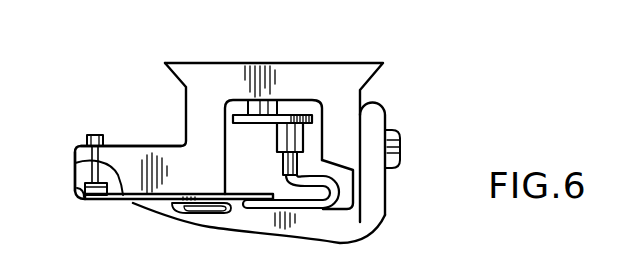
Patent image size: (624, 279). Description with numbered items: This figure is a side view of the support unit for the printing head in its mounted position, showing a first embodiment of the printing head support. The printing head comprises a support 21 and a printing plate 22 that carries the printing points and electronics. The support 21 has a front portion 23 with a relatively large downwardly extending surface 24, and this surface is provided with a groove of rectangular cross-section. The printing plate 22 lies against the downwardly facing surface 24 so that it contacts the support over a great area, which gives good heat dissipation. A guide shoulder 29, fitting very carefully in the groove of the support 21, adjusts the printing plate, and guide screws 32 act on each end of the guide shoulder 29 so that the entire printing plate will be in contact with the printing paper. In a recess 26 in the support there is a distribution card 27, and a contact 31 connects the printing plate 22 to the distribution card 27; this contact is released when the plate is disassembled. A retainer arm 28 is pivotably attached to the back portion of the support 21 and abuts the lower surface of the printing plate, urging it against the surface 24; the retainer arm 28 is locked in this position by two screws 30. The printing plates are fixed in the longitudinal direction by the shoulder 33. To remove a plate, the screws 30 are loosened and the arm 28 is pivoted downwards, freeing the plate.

The support 21 is at (392, 70).
The printing plate 22 is at (241, 199).
The front portion 23 is at (70, 146).
The downwardly extending surface 24 is at (75, 163).
The recess 26 is at (265, 168).
The distribution card 27 is at (279, 113).
The retainer arm 28 is at (385, 201).
The guide shoulder 29 is at (85, 188).
The screws 30 is at (400, 147).
The contact 31 is at (289, 138).
The guide screws 32 is at (87, 135).
The shoulder 33 is at (83, 199).